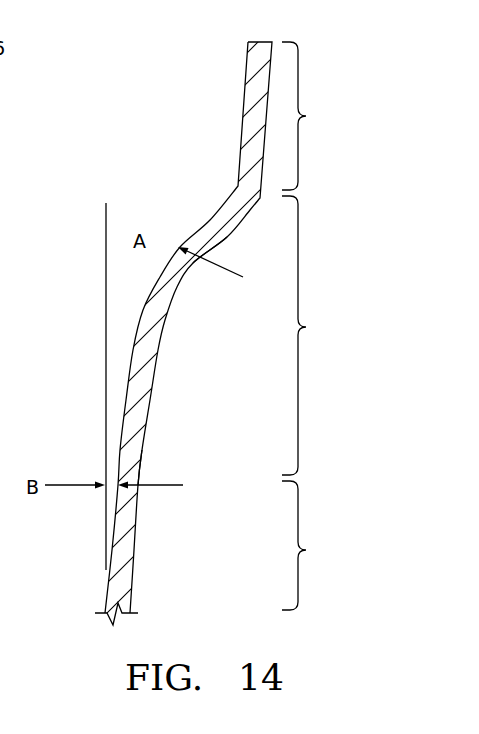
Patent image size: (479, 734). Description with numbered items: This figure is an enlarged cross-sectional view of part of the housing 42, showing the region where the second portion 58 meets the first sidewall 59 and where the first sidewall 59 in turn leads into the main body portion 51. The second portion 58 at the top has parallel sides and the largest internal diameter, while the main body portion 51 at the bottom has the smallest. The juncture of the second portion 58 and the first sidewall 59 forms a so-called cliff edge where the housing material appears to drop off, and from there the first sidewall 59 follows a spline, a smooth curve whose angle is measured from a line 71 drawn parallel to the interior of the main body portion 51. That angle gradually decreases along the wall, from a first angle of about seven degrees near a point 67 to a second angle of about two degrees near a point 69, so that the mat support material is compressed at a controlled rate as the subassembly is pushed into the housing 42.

The housing 42 is at (231, 88).
The second portion 58 is at (312, 116).
The first sidewall 59 is at (311, 335).
The main body portion 51 is at (309, 545).
The point 67 is at (203, 274).
The point 69 is at (146, 504).
The line 71 is at (98, 223).